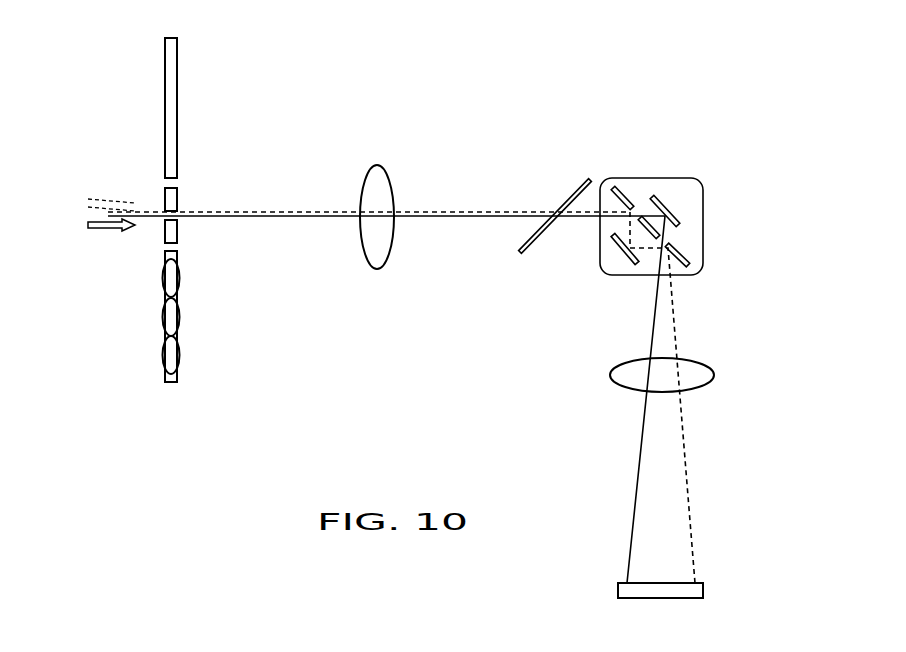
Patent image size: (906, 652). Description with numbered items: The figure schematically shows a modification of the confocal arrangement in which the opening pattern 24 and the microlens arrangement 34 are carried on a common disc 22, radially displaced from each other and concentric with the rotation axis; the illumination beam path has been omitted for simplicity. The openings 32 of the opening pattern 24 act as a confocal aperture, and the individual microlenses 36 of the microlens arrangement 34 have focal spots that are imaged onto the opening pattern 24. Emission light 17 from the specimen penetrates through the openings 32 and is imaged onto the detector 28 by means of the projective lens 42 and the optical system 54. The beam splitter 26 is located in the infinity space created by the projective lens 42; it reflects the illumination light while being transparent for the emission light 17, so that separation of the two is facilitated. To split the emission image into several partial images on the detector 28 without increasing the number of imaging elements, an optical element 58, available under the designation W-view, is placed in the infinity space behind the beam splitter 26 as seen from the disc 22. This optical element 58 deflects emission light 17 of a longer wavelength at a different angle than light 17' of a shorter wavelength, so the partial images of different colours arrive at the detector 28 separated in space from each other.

The common disc 22 is at (152, 84).
The openings 32 is at (168, 183).
The light at a shorter wavelength 17' is at (96, 203).
The emission light 17 is at (106, 238).
The opening pattern 24 is at (152, 243).
The microlens arrangement 34 is at (146, 325).
The microlenses 36 is at (175, 358).
The projective lens 42 is at (375, 180).
The beam splitter 26 is at (575, 190).
The optical element 58 is at (670, 173).
The optical system 54 is at (698, 378).
The detector 28 is at (693, 592).